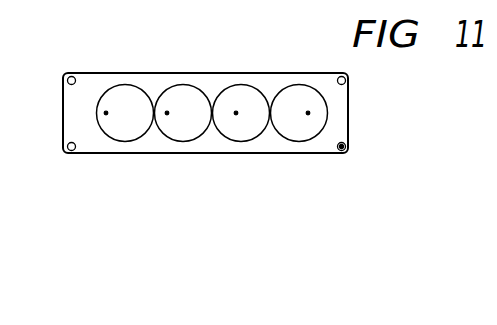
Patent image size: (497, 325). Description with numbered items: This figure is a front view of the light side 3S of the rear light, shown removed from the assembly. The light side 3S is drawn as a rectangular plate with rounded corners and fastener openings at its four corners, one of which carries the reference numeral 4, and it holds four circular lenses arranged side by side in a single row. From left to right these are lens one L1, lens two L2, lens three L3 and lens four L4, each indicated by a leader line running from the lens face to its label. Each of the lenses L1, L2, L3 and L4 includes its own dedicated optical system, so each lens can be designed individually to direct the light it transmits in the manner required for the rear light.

The light side 3S is at (412, 80).
The fixing screw 4 is at (342, 147).
The lens one L1 is at (106, 113).
The lens two L2 is at (167, 113).
The lens three L3 is at (236, 113).
The lens four L4 is at (308, 113).